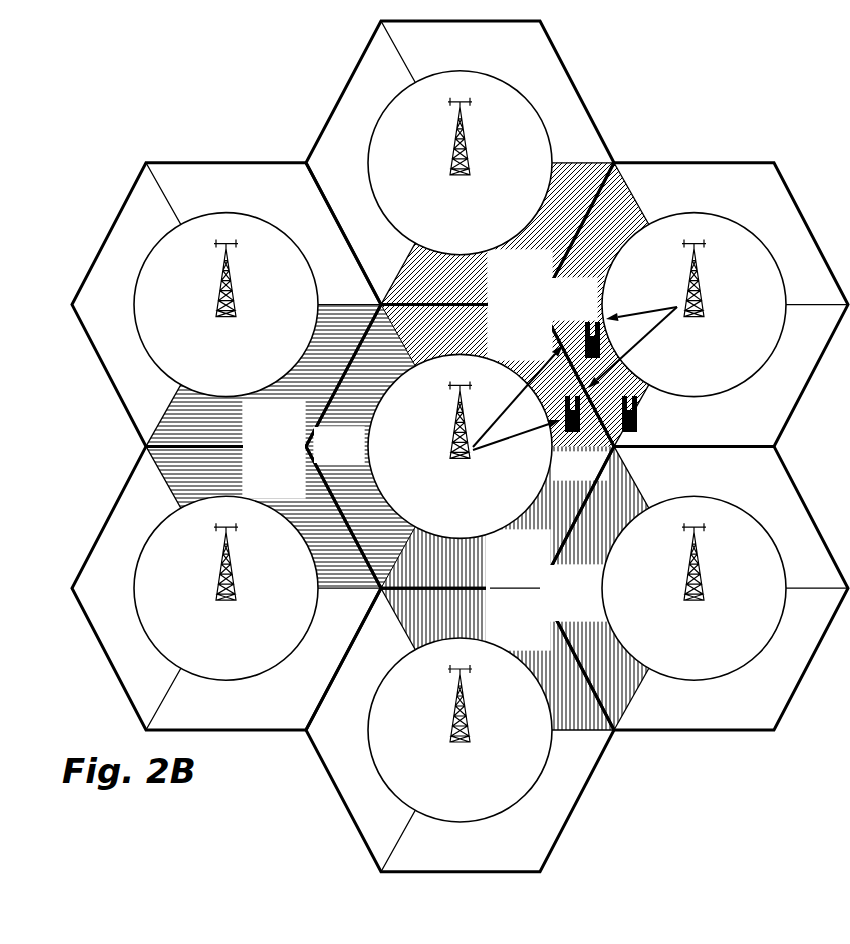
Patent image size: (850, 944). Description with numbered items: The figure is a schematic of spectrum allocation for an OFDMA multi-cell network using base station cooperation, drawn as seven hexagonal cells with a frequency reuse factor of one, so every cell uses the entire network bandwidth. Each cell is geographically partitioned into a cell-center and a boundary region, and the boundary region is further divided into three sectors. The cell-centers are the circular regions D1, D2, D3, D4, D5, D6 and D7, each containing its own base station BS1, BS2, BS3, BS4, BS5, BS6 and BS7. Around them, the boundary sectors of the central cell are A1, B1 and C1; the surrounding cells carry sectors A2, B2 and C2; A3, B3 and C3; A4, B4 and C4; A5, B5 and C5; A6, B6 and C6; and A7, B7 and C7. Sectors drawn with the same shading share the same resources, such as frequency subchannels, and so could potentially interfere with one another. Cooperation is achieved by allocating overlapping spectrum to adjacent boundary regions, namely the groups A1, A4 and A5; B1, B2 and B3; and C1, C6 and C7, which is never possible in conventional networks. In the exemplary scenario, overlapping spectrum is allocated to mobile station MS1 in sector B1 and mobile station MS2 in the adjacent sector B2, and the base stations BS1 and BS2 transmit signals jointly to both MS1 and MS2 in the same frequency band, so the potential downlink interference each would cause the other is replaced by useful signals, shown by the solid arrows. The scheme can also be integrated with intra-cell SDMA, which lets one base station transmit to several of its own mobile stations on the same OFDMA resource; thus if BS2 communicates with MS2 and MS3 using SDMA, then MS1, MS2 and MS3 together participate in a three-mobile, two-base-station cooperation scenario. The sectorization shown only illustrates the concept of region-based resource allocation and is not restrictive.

The sector A of cell 1 A1 is at (383, 447).
The sector B of cell 1 B1 is at (497, 376).
The sector C of cell 1 C1 is at (497, 548).
The cell-center of cell 1 D1 is at (460, 446).
The sector A of cell 2 A2 is at (693, 376).
The sector B of cell 2 B2 is at (617, 305).
The sector C of cell 2 C2 is at (731, 234).
The cell-center of cell 2 D2 is at (694, 305).
The sector A of cell 3 A3 is at (497, 92).
The sector B of cell 3 B3 is at (497, 261).
The sector C of cell 3 C3 is at (394, 225).
The cell-center of cell 3 D3 is at (460, 163).
The sector A of cell 4 A4 is at (263, 401).
The sector B of cell 4 B4 is at (158, 367).
The sector C of cell 4 C4 is at (263, 234).
The cell-center of cell 4 D4 is at (226, 305).
The sector A of cell 5 A5 is at (263, 517).
The sector B of cell 5 B5 is at (303, 651).
The sector C of cell 5 C5 is at (158, 588).
The cell-center of cell 5 D5 is at (226, 588).
The sector A of cell 6 A6 is at (537, 794).
The sector B of cell 6 B6 is at (393, 730).
The sector C of cell 6 C6 is at (497, 659).
The cell-center of cell 6 D6 is at (460, 730).
The sector A of cell 7 A7 is at (731, 517).
The sector B of cell 7 B7 is at (693, 659).
The sector C of cell 7 C7 is at (617, 588).
The cell-center of cell 7 D7 is at (694, 588).
The base station 1 BS1 is at (460, 438).
The base station 2 BS2 is at (695, 297).
The base station 3 BS3 is at (460, 152).
The base station 4 BS4 is at (225, 297).
The base station 5 BS5 is at (225, 580).
The base station 6 BS6 is at (460, 722).
The base station 7 BS7 is at (695, 580).
The mobile station 1 MS1 is at (540, 438).
The mobile station 2 MS2 is at (575, 359).
The mobile station 3 MS3 is at (645, 371).